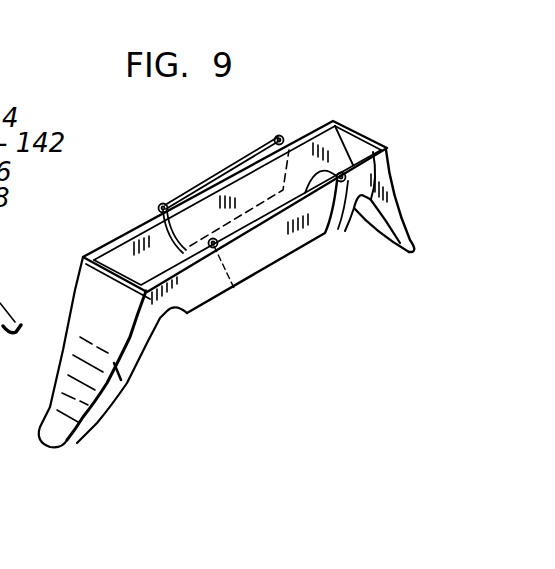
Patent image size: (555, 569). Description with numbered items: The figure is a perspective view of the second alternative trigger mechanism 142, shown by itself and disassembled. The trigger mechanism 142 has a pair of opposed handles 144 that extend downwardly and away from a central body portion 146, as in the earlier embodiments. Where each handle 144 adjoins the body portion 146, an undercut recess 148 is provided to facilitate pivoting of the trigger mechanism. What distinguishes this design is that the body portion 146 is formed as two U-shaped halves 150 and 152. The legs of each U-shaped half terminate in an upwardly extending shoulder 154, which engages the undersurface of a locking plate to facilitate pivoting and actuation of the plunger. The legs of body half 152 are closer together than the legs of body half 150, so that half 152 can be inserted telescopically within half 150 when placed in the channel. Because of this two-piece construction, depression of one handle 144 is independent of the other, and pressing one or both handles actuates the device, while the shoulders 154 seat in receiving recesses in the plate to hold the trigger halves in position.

The trigger mechanism 142 is at (280, 298).
The handle 144 is at (40, 421).
The central body portion 146 is at (233, 164).
The undercut recess 148 is at (172, 314).
The U-shaped half 150 is at (116, 239).
The U-shaped half 152 is at (333, 118).
The upwardly extending shoulder 154 is at (281, 135).